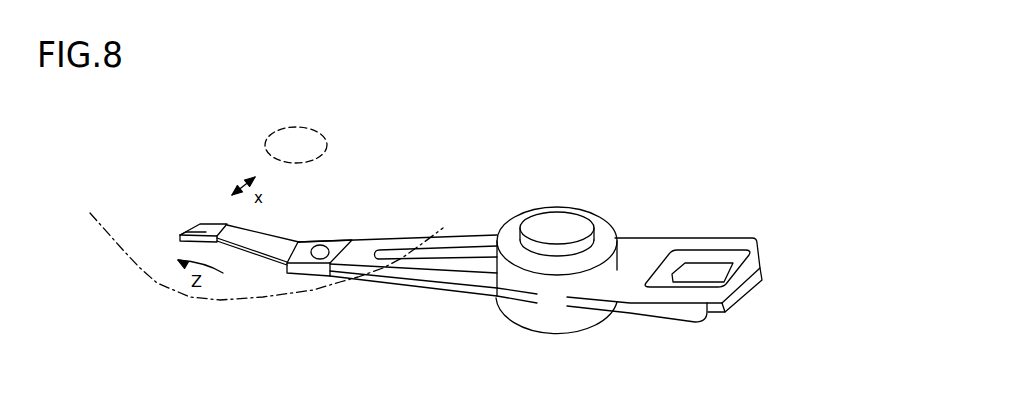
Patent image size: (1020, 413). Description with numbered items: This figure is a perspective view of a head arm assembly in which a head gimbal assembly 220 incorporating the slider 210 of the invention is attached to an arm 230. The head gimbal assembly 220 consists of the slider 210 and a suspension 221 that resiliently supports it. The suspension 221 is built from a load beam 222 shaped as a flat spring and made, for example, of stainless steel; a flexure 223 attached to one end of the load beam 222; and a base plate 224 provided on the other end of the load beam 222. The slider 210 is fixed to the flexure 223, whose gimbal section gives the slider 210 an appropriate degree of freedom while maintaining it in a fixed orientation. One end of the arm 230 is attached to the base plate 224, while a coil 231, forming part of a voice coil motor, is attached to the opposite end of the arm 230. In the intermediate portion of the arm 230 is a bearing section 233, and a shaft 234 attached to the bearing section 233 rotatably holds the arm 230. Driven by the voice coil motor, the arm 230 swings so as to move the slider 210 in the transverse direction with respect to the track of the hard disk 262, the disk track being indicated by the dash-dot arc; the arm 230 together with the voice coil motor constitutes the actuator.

The slider 210 is at (213, 225).
The head gimbal assembly 220 is at (277, 277).
The suspension 221 is at (280, 208).
The load beam 222 is at (293, 242).
The flexure 223 is at (190, 232).
The base plate 224 is at (348, 239).
The arm 230 is at (403, 280).
The coil 231 is at (747, 291).
The bearing section 233 is at (513, 220).
The shaft 234 is at (567, 220).
The hard disk 262 is at (218, 297).